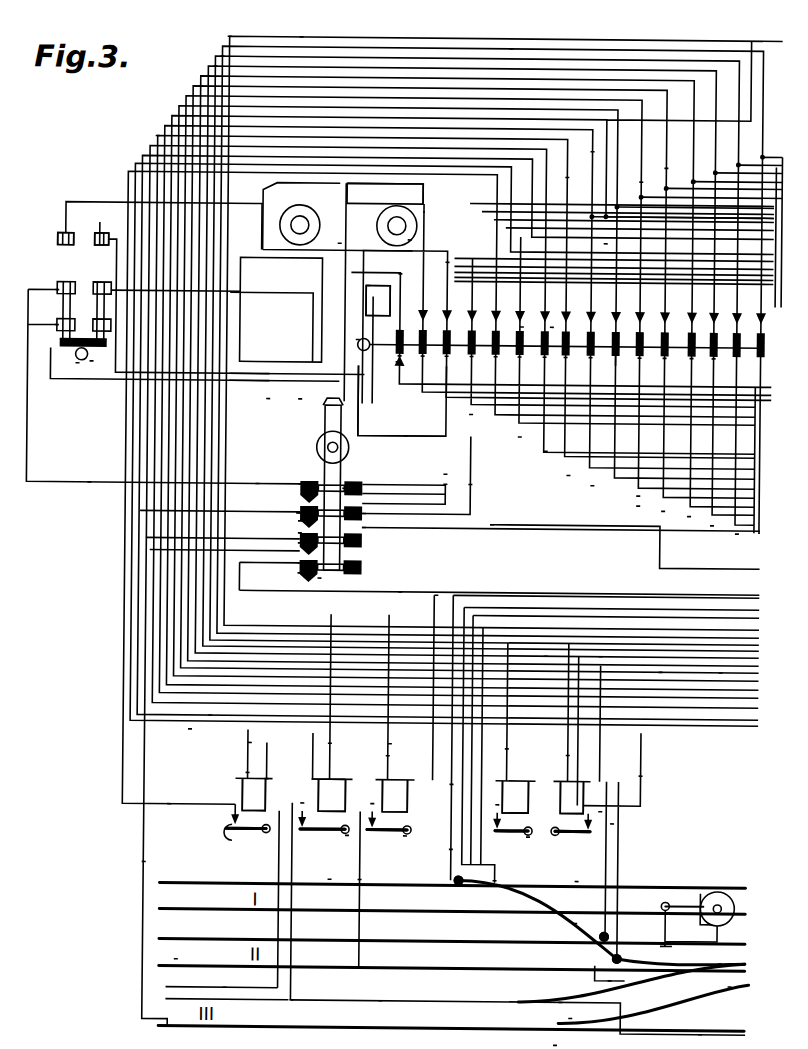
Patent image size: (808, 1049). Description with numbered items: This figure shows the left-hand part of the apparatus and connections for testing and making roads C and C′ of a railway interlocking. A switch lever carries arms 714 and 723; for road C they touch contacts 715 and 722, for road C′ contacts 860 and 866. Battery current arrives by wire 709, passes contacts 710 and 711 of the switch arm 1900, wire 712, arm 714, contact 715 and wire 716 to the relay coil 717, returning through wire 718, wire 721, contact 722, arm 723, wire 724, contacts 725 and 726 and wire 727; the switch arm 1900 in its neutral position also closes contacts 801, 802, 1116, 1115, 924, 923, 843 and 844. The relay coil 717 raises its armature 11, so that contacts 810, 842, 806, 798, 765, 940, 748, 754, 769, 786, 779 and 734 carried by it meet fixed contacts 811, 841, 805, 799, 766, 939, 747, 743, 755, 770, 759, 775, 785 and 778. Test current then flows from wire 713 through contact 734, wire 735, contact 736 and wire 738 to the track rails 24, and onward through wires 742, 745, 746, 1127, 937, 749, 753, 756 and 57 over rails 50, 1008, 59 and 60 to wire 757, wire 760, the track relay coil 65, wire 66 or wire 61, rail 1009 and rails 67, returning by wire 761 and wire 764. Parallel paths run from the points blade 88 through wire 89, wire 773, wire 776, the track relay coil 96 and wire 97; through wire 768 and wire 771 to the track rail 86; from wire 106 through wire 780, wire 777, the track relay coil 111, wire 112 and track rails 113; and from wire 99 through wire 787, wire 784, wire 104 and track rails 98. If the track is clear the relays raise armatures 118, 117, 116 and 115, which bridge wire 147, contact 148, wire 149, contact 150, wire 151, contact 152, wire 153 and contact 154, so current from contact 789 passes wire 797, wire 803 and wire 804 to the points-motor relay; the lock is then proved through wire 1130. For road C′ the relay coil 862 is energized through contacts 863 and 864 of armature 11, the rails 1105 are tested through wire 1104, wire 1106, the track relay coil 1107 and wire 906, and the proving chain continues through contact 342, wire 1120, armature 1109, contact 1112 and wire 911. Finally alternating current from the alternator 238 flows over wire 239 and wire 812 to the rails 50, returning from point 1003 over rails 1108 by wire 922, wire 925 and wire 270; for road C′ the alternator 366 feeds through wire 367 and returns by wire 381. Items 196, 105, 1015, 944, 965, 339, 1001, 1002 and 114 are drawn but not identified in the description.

The alternator 366 is at (292, 206).
The wire 381 is at (387, 214).
The wire 239 is at (402, 184).
The switch arm 1900 is at (321, 444).
The contact 863 is at (371, 338).
The relay coil 717 is at (378, 301).
The contact 860 is at (62, 232).
The contact 866 is at (102, 230).
The arm 723 is at (84, 311).
The signal 196 is at (714, 888).
The track relay coil 1107 is at (250, 792).
The track relay coil 111 is at (331, 795).
The switch coil 105 is at (394, 796).
The track relay coil 96 is at (515, 797).
The track relay coil 65 is at (571, 797).
The armature 1109 is at (258, 829).
The contact 342 is at (330, 829).
The contact 152 is at (395, 829).
The contact 150 is at (518, 829).
The armature 118 is at (568, 829).
The wire 738 is at (467, 874).
The points blade 88 is at (617, 930).
The track rail 60 is at (631, 953).
The wire 784 is at (230, 34).
The wire 776 is at (223, 54).
The wire 760 is at (216, 64).
The wire 771 is at (209, 74).
The wire 756 is at (201, 84).
The wire 925 is at (159, 134).
The wire 713 is at (301, 34).
The wire 777 is at (511, 44).
The wire 742 is at (594, 146).
The wire 746 is at (569, 172).
The contact 736 is at (608, 238).
The wire 270 is at (426, 210).
The alternator 238 is at (412, 236).
The wire 367 is at (342, 240).
The wire 812 is at (450, 258).
The wire 718 is at (371, 282).
The relay coil 862 is at (403, 266).
The armature 11 is at (361, 336).
The contact 864 is at (401, 358).
The arm 714 is at (60, 289).
The contact 715 is at (60, 324).
The contact 1015 is at (81, 362).
The contact 722 is at (95, 360).
The contact 811 is at (426, 310).
The contact 841 is at (450, 310).
The contact 805 is at (475, 310).
The contact 799 is at (499, 310).
The contact 766 is at (523, 310).
The contact 939 is at (529, 331).
The contact 747 is at (548, 310).
The contact 940 is at (563, 331).
The contact 743 is at (569, 310).
The contact 755 is at (594, 310).
The contact 770 is at (619, 310).
The contact 759 is at (643, 310).
The contact 775 is at (668, 310).
The contact 785 is at (695, 310).
The contact 778 is at (717, 310).
The wire 735 is at (740, 310).
The contact 810 is at (403, 352).
The contact 842 is at (426, 352).
The contact 806 is at (450, 352).
The contact 798 is at (475, 352).
The contact 765 is at (499, 352).
The contact 748 is at (523, 352).
The contact 944 is at (548, 352).
The contact 754 is at (569, 352).
The contact 769 is at (594, 352).
The contact 734 is at (643, 352).
The contact 786 is at (668, 352).
The contact 779 is at (695, 352).
The wire 716 is at (272, 396).
The wire 965 is at (304, 396).
The wire 797 is at (480, 410).
The wire 721 is at (410, 432).
The wire 764 is at (524, 432).
The wire 749 is at (550, 446).
The wire 712 is at (94, 481).
The contact 711 is at (305, 481).
The contact 843 is at (356, 480).
The wire 724 is at (450, 470).
The contact 844 is at (450, 480).
The wire 1130 is at (475, 480).
The wire 1127 is at (573, 470).
The wire 745 is at (597, 480).
The wire 709 is at (271, 506).
The contact 710 is at (305, 510).
The contact 801 is at (305, 518).
The contact 725 is at (369, 510).
The contact 802 is at (305, 530).
The contact 726 is at (369, 524).
The wire 727 is at (495, 520).
The wire 753 is at (643, 490).
The wire 768 is at (643, 500).
The wire 757 is at (668, 505).
The wire 773 is at (694, 510).
The wire 787 is at (717, 519).
The wire 780 is at (742, 527).
The contact 1116 is at (305, 540).
The contact 1115 is at (305, 560).
The wire 803 is at (414, 586).
The contact 924 is at (305, 570).
The contact 923 is at (325, 578).
The wire 937 is at (727, 666).
The wire 804 is at (197, 727).
The contact 789 is at (255, 740).
The wire 761 is at (399, 742).
The wire 906 is at (255, 770).
The wire 1120 is at (277, 772).
The contact 154 is at (310, 800).
The wire 153 is at (380, 800).
The wire 151 is at (459, 780).
The wire 97 is at (575, 750).
The wire 147 is at (648, 770).
The wire 149 is at (505, 800).
The wire 911 is at (183, 803).
The contact 1112 is at (238, 815).
The contact 148 is at (608, 806).
The wire 89 is at (620, 818).
The armature 115 is at (355, 832).
The armature 116 is at (413, 832).
The wire 104 is at (459, 845).
The armature 117 is at (536, 832).
The wire 922 is at (152, 860).
The wire 339 is at (338, 876).
The wire 112 is at (368, 876).
The wire 1104 is at (503, 876).
The wire 66 is at (585, 876).
The track rail 1001 is at (185, 907).
The track rails 67 is at (340, 904).
The track rails 24 is at (584, 918).
The track rail 1002 is at (185, 957).
The track rails 98 is at (431, 962).
The wire 99 is at (461, 964).
The wire 61 is at (569, 937).
The track rails 59 is at (559, 963).
The track rail 1008 is at (731, 960).
The wire 1106 is at (234, 985).
The wire 106 is at (301, 997).
The track rails 1105 is at (390, 997).
The track rail 1009 is at (619, 975).
The track rail 86 is at (739, 980).
The track rails 1108 is at (270, 1024).
The point 1003 is at (175, 1026).
The track section 114 is at (530, 1024).
The track rails 113 is at (582, 1010).
The track rails 50 is at (565, 1040).
The wire 57 is at (712, 1032).